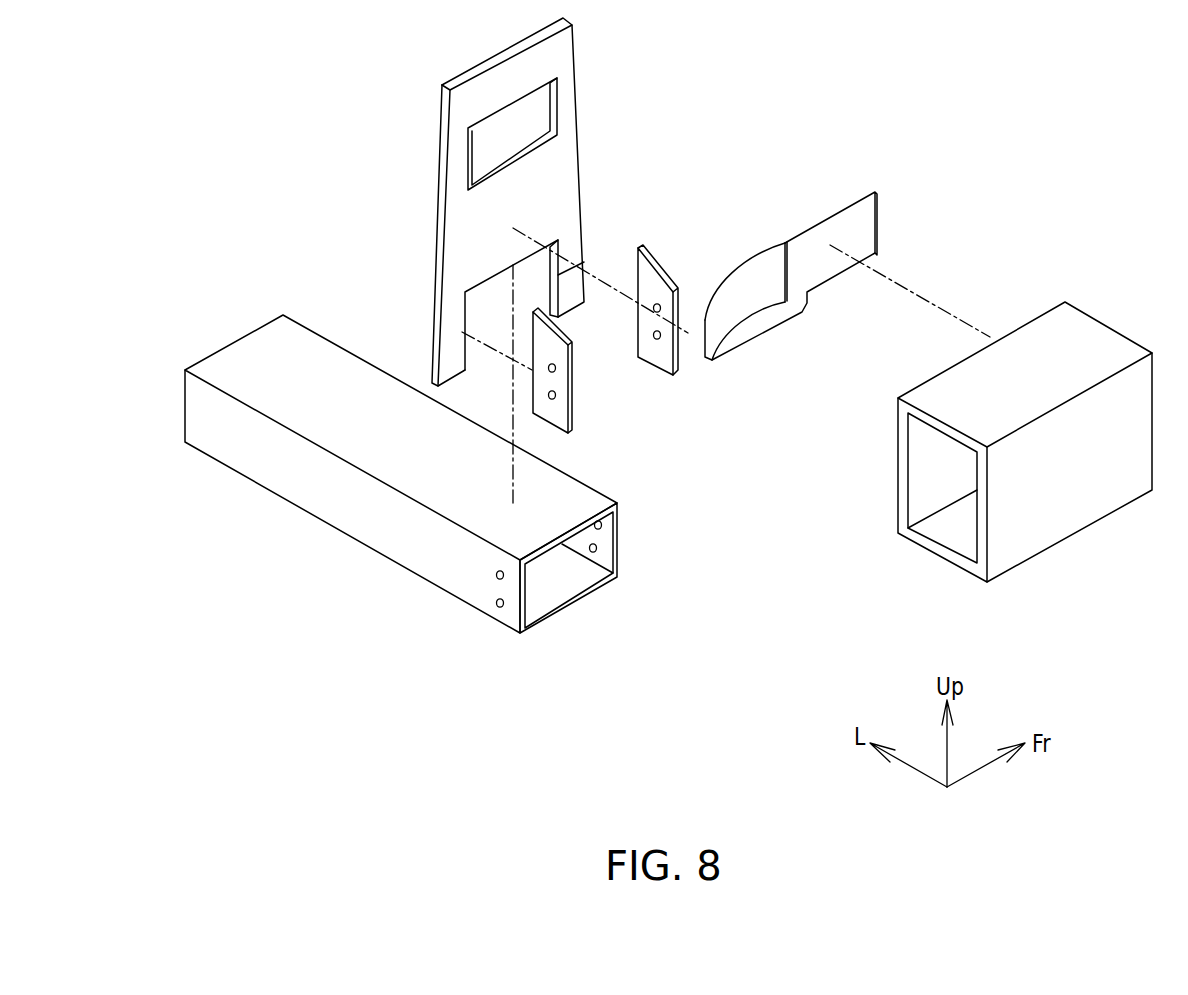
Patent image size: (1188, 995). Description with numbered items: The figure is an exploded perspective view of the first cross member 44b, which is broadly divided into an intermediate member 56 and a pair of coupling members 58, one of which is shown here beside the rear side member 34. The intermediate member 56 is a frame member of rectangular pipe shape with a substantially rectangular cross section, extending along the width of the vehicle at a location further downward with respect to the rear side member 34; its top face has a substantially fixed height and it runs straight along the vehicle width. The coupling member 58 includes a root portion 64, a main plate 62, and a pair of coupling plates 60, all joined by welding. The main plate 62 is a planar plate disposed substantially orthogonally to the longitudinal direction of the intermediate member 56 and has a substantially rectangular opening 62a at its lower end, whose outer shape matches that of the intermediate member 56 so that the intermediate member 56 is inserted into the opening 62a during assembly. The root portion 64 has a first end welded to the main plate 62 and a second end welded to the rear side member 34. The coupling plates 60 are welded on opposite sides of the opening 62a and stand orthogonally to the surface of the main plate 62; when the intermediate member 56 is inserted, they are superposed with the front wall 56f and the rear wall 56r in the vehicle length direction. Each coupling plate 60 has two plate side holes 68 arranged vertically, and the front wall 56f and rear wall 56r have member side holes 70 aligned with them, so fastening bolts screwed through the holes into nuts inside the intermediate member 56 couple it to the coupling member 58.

The rear side member 34 is at (1078, 340).
The first cross member 44b is at (363, 156).
The intermediate member 56 is at (303, 342).
The rear wall 56r is at (387, 523).
The front wall 56f is at (610, 578).
The coupling member 58 is at (736, 105).
The coupling plate 60 is at (657, 252).
The main plate 62 is at (572, 143).
The opening 62a is at (468, 347).
The root portion 64 is at (858, 200).
The plate side hole 68 is at (656, 339).
The member side hole 70 is at (495, 606).